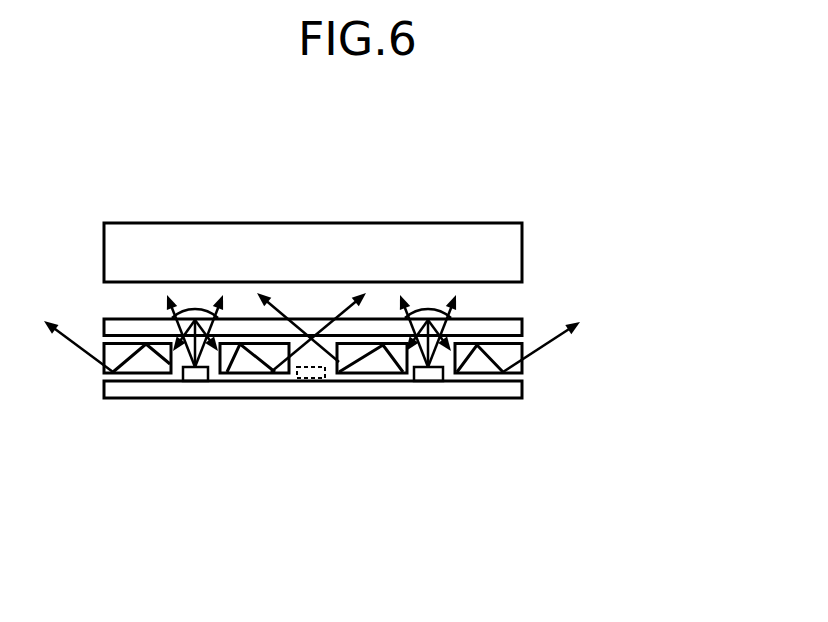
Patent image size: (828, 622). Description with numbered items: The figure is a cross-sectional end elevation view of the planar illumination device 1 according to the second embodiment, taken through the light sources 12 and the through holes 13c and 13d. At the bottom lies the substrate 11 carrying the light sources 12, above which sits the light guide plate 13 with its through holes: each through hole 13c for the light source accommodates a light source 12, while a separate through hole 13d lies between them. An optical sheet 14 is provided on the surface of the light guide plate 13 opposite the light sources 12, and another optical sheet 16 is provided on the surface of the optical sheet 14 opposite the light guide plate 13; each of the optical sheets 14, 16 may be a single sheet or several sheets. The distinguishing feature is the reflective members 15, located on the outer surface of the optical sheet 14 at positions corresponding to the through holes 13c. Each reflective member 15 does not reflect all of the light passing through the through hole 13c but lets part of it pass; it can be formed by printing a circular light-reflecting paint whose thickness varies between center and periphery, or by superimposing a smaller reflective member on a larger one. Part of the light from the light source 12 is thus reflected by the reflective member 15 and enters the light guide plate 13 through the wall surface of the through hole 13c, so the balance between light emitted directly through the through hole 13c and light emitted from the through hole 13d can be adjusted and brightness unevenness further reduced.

The planar illumination device 1 is at (520, 173).
The substrate 11 is at (513, 388).
The light source 12 is at (193, 373).
The light guide plate 13 is at (513, 353).
The through hole for the light source 13c is at (178, 363).
The through hole 13d is at (327, 358).
The optical sheet 14 is at (503, 327).
The reflective member 15 is at (430, 317).
The optical sheet 16 is at (513, 244).